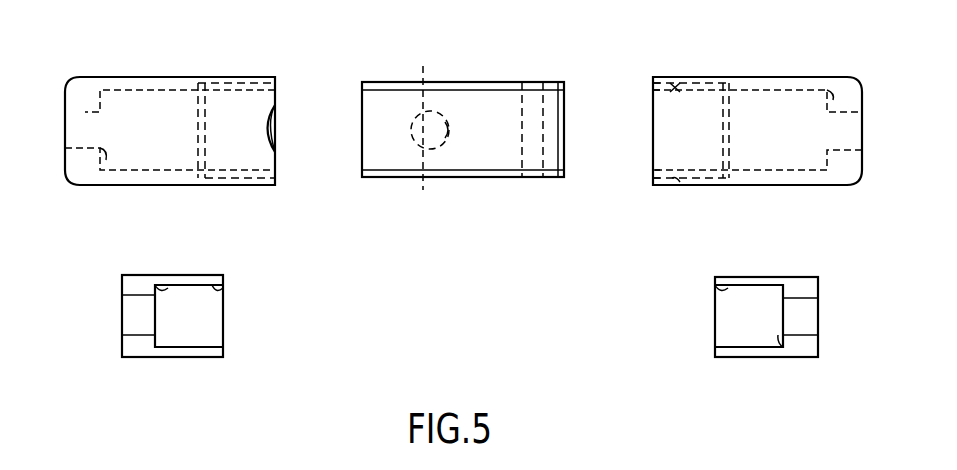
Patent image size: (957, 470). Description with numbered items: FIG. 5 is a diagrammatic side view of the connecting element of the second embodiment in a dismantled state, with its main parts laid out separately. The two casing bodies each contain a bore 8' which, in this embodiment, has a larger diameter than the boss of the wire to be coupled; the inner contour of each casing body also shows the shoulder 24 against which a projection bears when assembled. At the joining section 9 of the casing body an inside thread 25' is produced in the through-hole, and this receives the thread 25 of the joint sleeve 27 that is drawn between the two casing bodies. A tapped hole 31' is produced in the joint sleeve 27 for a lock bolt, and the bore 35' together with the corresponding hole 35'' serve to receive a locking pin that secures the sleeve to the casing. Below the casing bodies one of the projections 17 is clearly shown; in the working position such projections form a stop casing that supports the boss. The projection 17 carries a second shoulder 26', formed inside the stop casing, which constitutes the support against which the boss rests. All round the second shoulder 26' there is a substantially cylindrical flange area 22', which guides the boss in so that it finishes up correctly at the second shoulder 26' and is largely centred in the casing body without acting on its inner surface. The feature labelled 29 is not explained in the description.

The bore 8' is at (461, 122).
The shoulder 24 is at (103, 180).
The inside thread 25' is at (463, 111).
The bulge 29 is at (298, 116).
The thread 25 is at (463, 117).
The joining section 9 is at (420, 74).
The tapped hole 31' is at (421, 162).
The hole 35'' is at (523, 117).
The joint sleeve 27 is at (508, 178).
The bore 35' is at (699, 133).
The projection 17 is at (183, 358).
The cylindrical flange area 22' is at (469, 314).
The second shoulder 26' is at (469, 321).